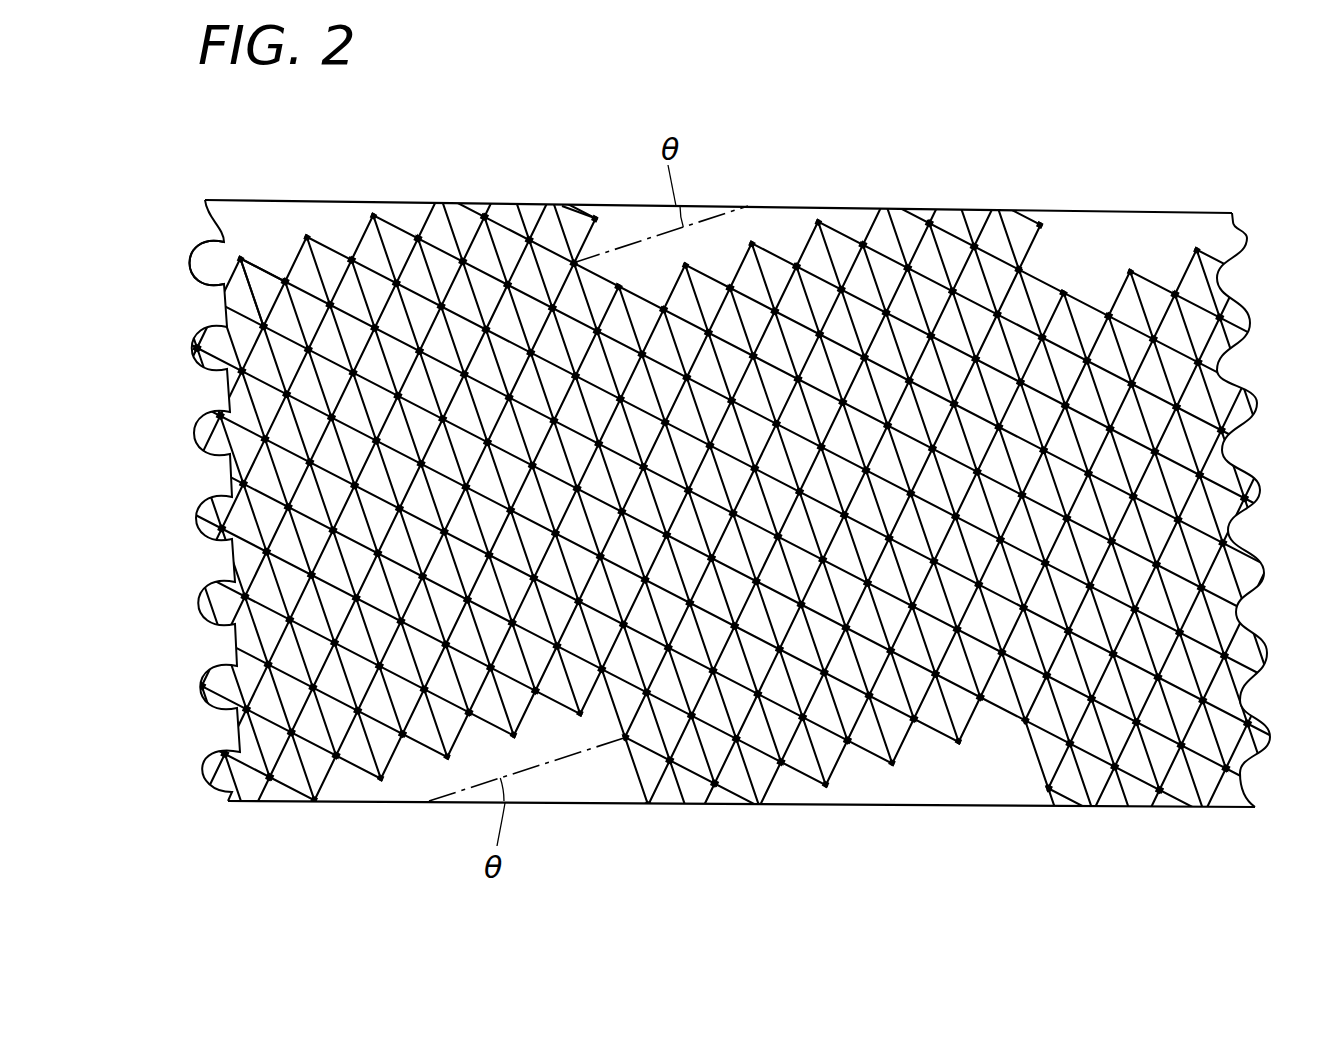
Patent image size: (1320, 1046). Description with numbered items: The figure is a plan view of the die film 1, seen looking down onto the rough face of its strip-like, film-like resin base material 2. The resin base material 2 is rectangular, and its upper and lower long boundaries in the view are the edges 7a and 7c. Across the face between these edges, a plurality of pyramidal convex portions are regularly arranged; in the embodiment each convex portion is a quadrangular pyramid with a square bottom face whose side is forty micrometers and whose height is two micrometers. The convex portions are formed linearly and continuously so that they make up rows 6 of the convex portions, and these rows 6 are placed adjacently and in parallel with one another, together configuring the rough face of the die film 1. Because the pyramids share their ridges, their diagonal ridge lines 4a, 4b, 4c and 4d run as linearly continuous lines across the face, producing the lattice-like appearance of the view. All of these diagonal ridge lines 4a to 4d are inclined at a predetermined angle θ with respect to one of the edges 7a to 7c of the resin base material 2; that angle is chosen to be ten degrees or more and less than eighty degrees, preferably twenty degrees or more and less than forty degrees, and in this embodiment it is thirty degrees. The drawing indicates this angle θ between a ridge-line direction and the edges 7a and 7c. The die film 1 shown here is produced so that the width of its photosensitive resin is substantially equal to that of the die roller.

The die film 1 is at (1229, 170).
The resin base material 2 is at (1082, 243).
The diagonal ridge line 4a is at (232, 253).
The diagonal ridge line 4b is at (196, 263).
The diagonal ridge line 4c is at (198, 344).
The diagonal ridge line 4d is at (273, 282).
The row of the convex portions 6 is at (566, 214).
The edge 7a is at (643, 206).
The edge 7c is at (593, 806).